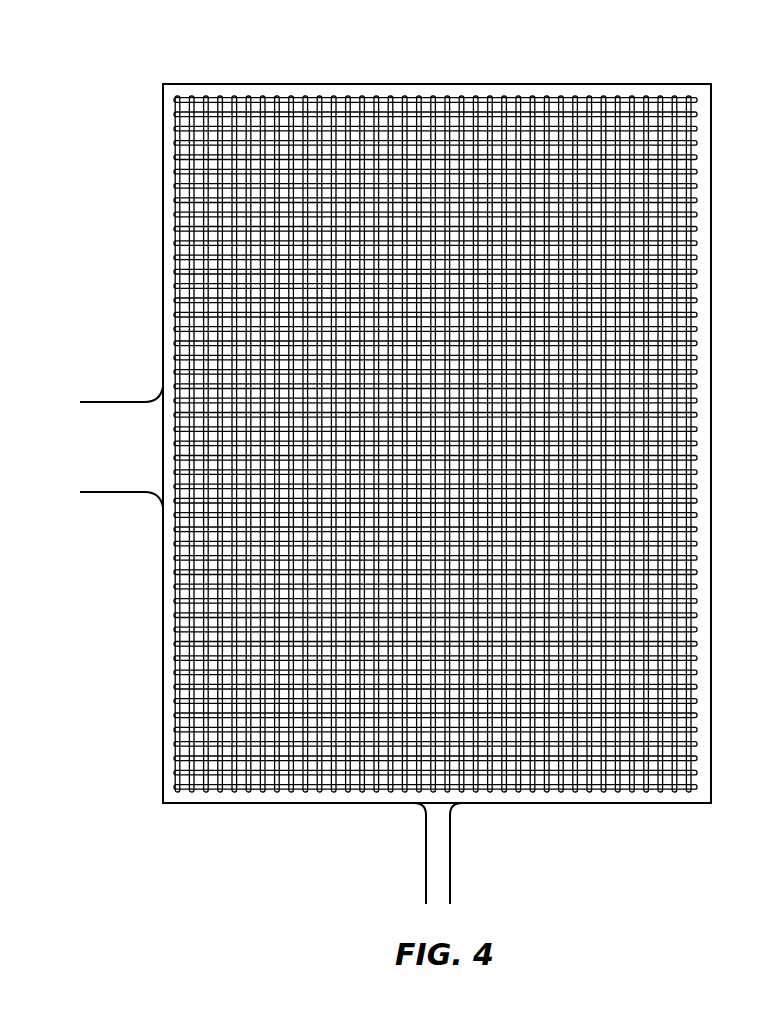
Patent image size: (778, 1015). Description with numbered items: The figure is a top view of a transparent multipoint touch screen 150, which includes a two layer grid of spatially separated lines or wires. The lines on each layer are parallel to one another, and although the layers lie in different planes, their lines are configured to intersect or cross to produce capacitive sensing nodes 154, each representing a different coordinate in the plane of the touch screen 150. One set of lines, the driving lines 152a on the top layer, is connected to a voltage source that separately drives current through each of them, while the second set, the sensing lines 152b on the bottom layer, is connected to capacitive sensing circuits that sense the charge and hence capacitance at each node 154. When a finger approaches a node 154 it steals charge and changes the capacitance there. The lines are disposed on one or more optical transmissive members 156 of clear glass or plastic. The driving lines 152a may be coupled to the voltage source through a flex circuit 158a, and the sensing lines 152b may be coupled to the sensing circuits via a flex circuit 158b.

The transparent multipoint touch screen 150 is at (512, 46).
The driving lines 152a is at (292, 792).
The sensing lines 152b is at (178, 632).
The capacitive sensing nodes 154 is at (576, 792).
The optical transmissive member 156 is at (558, 84).
The flex circuit 158a is at (436, 863).
The flex circuit 158b is at (120, 412).